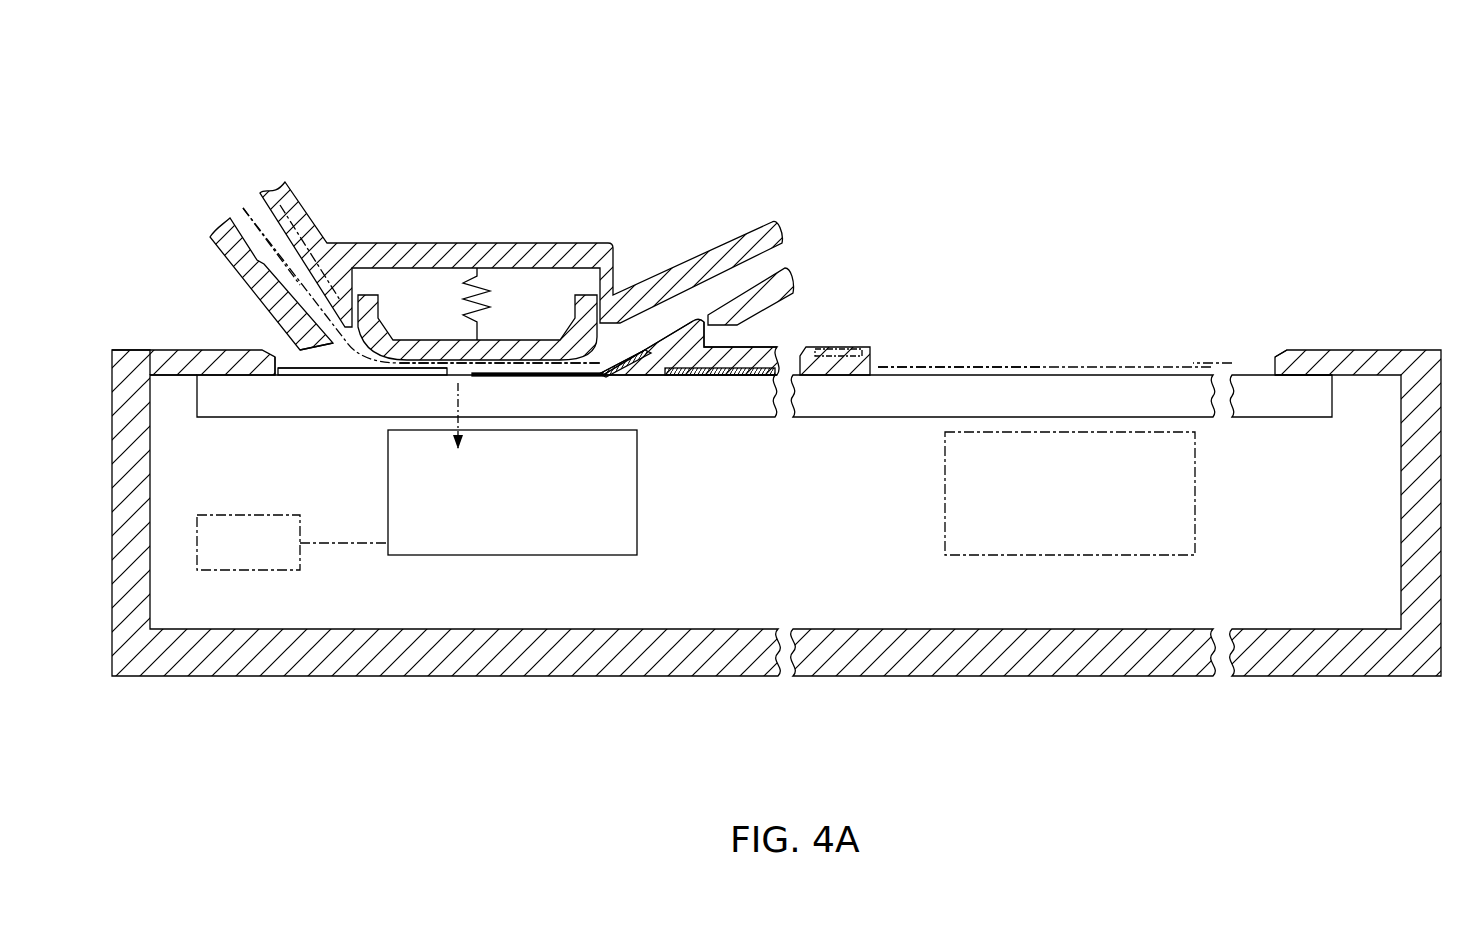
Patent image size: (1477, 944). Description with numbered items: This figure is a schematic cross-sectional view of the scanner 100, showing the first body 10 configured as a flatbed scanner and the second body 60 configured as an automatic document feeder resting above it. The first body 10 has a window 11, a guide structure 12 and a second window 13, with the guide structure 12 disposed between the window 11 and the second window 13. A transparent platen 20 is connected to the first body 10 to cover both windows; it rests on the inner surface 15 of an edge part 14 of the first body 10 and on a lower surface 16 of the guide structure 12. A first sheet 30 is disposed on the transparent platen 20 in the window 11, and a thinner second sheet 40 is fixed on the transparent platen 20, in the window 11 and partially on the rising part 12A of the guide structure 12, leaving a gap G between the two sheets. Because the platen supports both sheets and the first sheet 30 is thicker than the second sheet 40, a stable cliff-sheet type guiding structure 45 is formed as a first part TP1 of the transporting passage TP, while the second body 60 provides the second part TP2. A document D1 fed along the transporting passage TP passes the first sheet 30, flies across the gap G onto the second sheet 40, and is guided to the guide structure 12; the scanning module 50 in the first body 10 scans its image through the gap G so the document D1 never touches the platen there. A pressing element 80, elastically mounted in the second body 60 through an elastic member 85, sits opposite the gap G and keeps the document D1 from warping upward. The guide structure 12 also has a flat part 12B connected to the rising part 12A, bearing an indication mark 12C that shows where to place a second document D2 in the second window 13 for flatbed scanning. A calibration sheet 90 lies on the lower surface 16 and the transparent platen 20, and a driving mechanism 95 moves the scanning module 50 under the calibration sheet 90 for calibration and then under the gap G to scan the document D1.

The scanner 100 is at (805, 68).
The first body 10 is at (1388, 345).
The window 11 is at (278, 347).
The guide structure 12 is at (780, 343).
The rising part 12A is at (680, 375).
The flat part 12B is at (762, 375).
The indication mark 12C is at (840, 352).
The second window 13 is at (1249, 353).
The edge part 14 is at (125, 350).
The inner surface 15 is at (178, 380).
The lower surface 16 is at (705, 375).
The transparent platen 20 is at (213, 388).
The first sheet 30 is at (328, 373).
The second sheet 40 is at (620, 377).
The cliff-sheet type guiding structure 45 is at (1039, 228).
The scanning module 50 is at (638, 538).
The second body 60 is at (288, 179).
The pressing element 80 is at (541, 343).
The elastic member 85 is at (478, 290).
The calibration sheet 90 is at (732, 375).
The driving mechanism 95 is at (243, 515).
The gap G is at (458, 372).
The first part of the transporting passage TP1 is at (243, 215).
The second part of the transporting passage TP2 is at (630, 336).
The transporting passage TP is at (1179, 228).
The document D1 is at (290, 215).
The second document D2 is at (1042, 362).